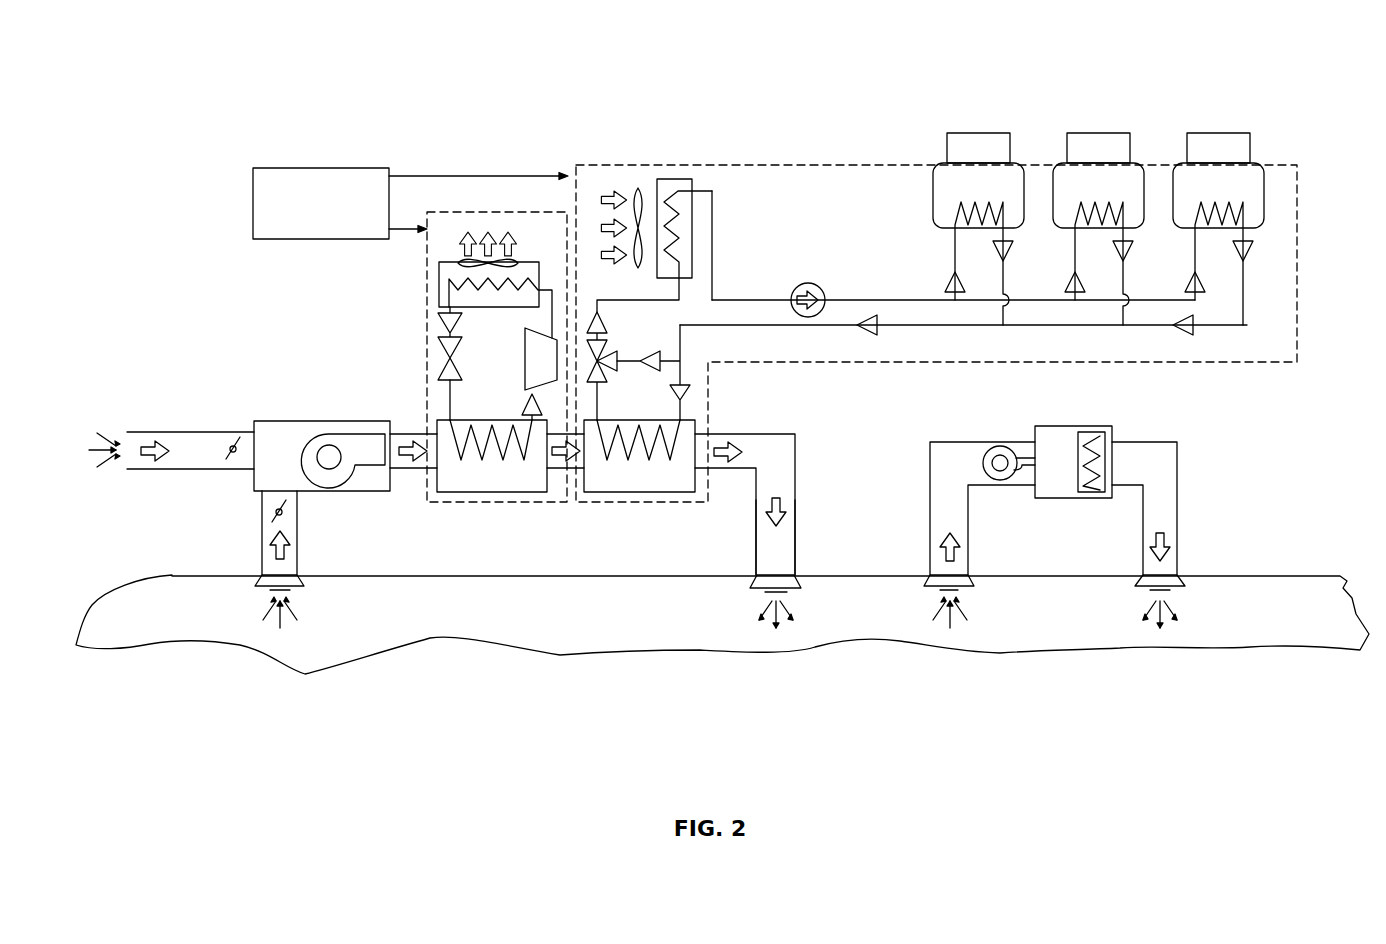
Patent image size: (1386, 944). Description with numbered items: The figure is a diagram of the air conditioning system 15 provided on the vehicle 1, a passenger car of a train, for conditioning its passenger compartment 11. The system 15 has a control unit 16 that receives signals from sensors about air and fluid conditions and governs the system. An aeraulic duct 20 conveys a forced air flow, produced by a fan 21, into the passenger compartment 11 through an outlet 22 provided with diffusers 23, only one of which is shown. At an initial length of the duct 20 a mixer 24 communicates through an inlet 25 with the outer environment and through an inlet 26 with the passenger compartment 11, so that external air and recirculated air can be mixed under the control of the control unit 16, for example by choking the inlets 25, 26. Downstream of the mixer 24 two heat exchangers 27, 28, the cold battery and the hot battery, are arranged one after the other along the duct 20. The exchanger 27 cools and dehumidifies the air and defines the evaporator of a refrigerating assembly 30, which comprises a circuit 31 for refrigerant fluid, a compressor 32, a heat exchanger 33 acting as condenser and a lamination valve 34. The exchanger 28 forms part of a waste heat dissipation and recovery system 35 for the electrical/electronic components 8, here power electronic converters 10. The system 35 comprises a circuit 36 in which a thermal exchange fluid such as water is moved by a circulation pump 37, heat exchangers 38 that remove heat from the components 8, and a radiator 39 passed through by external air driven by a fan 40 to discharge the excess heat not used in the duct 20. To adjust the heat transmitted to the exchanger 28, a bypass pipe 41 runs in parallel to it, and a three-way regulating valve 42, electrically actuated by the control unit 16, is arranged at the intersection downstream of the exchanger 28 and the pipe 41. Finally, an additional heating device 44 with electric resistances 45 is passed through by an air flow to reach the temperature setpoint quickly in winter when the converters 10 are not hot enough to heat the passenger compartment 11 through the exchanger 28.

The vehicle 1 is at (1284, 474).
The electrical/electronic components 8 is at (1103, 192).
The power electronic converters 10 is at (966, 161).
The passenger compartment 11 is at (462, 617).
The air conditioning system 15 is at (805, 441).
The control unit 16 is at (305, 215).
The aeraulic duct 20 is at (763, 464).
The fan 21 is at (355, 459).
The outlet 22 is at (763, 572).
The diffusers 23 is at (760, 590).
The mixer 24 is at (322, 456).
The inlet 25 is at (134, 472).
The inlet 26 is at (262, 586).
The heat exchanger 27 is at (477, 487).
The heat exchanger 28 is at (626, 487).
The refrigerating assembly 30 is at (420, 322).
The circuit 31 is at (447, 398).
The compressor 32 is at (529, 371).
The heat exchanger 33 is at (437, 290).
The lamination valve 34 is at (464, 368).
The waste heat dissipation and recovery system 35 is at (823, 158).
The circuit 36 is at (859, 294).
The circulation pump 37 is at (812, 283).
The heat exchanger 38 is at (965, 196).
The radiator 39 is at (680, 180).
The fan 40 is at (638, 188).
The bypass pipe 41 is at (668, 362).
The three-way regulating valve 42 is at (603, 344).
The additional heating device 44 is at (1054, 505).
The electric resistances 45 is at (1080, 485).